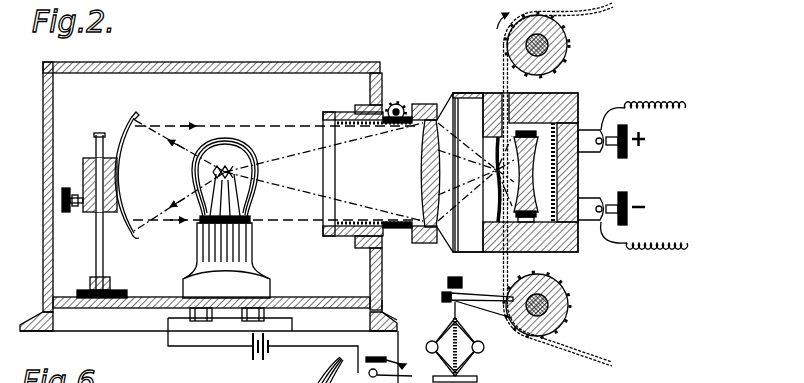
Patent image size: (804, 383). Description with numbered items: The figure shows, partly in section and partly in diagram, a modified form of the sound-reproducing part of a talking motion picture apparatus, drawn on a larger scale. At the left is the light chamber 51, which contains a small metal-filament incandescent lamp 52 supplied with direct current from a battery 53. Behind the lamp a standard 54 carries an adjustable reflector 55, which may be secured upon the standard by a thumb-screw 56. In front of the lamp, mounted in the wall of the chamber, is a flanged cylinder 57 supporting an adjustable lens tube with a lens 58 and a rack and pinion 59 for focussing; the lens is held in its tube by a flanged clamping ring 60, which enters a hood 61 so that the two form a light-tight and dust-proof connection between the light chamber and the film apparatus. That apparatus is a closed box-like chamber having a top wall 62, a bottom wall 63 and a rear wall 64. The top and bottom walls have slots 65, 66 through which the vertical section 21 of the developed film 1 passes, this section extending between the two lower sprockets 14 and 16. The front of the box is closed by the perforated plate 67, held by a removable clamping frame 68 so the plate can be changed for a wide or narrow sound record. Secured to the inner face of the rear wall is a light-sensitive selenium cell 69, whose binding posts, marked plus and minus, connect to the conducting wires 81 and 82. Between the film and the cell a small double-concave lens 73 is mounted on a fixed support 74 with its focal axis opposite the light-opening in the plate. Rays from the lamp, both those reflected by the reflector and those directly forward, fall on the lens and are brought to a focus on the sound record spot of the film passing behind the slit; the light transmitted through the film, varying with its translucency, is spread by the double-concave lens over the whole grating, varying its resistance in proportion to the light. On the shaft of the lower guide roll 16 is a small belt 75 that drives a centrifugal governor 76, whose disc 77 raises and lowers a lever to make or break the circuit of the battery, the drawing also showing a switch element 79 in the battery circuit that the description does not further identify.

The developed film 1 is at (558, 335).
The lower sprocket 14 is at (551, 42).
The lower guide roll 16 is at (570, 303).
The vertical section of the film 21 is at (503, 64).
The light chamber 51 is at (208, 196).
The incandescent lamp 52 is at (246, 195).
The battery 53 is at (286, 357).
The standard 54 is at (104, 251).
The adjustable reflector 55 is at (134, 116).
The thumb-screw 56 is at (68, 213).
The flanged cylinder 57 is at (338, 234).
The lens 58 is at (423, 150).
The rack and pinion 59 is at (399, 103).
The flanged clamping ring 60 is at (412, 236).
The hood 61 is at (441, 250).
The top wall 62 is at (580, 103).
The bottom wall 63 is at (556, 250).
The rear wall 64 is at (590, 130).
The slot 65 is at (512, 93).
The slot 66 is at (508, 248).
The perforated plate 67 is at (496, 137).
The removable clamping frame 68 is at (484, 110).
The selenium cell 69 is at (578, 168).
The double-concave lens 73 is at (578, 183).
The fixed support 74 is at (580, 247).
The belt 75 is at (477, 293).
The centrifugal governor 76 is at (482, 342).
The disc 77 is at (470, 376).
The switch 79 is at (393, 361).
The conducting wire 81 is at (688, 106).
The conducting wire 82 is at (688, 243).